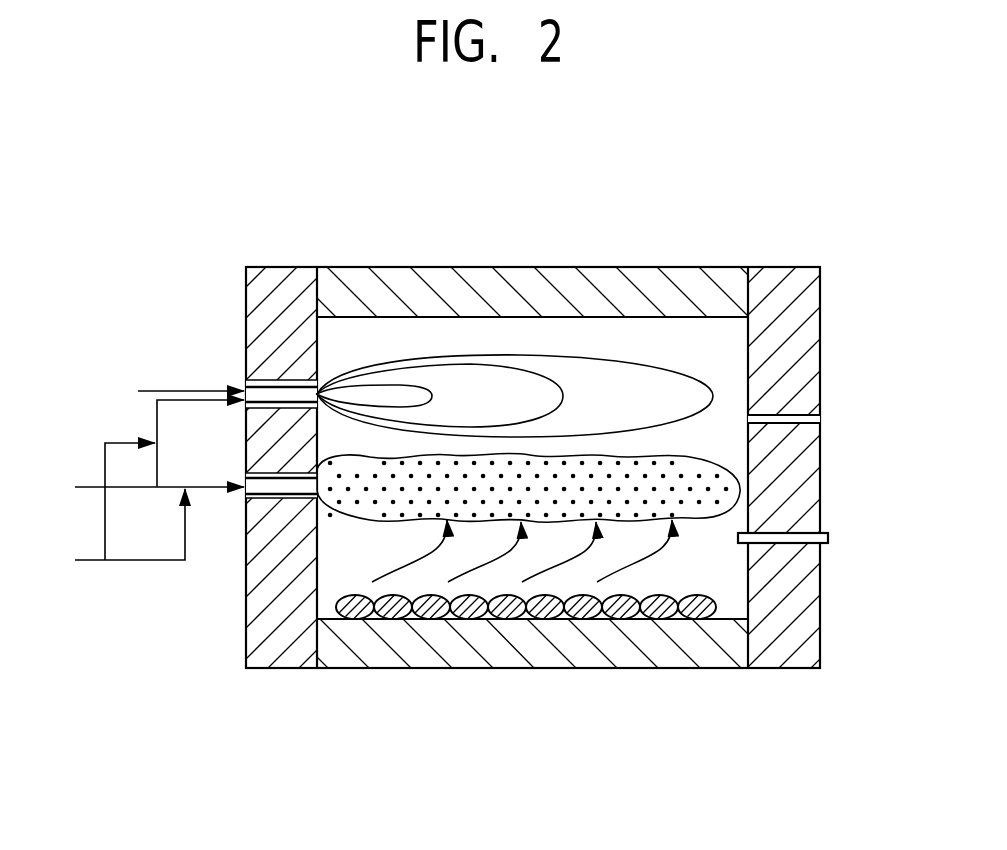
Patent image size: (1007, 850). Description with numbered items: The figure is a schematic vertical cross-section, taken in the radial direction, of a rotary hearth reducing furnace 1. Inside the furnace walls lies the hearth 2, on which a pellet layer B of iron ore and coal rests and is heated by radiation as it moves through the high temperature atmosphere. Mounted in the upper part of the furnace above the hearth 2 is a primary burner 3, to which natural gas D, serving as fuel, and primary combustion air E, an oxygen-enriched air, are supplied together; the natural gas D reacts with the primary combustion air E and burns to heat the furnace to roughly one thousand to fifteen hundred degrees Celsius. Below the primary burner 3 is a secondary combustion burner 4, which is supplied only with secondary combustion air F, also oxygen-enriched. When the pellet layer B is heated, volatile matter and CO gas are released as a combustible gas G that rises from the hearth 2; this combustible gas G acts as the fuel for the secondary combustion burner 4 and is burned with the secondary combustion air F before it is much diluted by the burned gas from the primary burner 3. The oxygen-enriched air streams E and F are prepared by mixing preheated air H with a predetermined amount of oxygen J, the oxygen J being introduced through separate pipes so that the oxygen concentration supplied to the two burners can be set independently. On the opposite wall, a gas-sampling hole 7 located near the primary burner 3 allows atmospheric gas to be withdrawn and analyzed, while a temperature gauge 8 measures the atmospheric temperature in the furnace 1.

The reducing furnace 1 is at (682, 267).
The hearth 2 is at (333, 620).
The primary burner 3 is at (287, 380).
The secondary combustion burner 4 is at (275, 498).
The gas-sampling hole 7 is at (821, 420).
The temperature gauge 8 is at (829, 538).
The natural gas D is at (174, 394).
The primary combustion air E is at (157, 400).
The secondary combustion air F is at (200, 487).
The preheated air H is at (144, 488).
The oxygen J is at (117, 534).
The combustible gas G is at (485, 570).
The pellet layer B is at (626, 600).